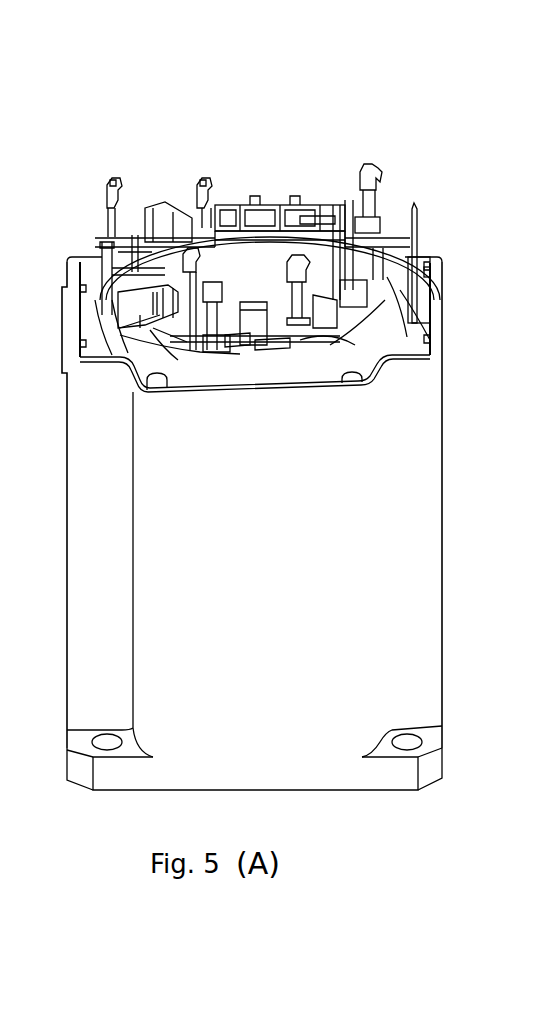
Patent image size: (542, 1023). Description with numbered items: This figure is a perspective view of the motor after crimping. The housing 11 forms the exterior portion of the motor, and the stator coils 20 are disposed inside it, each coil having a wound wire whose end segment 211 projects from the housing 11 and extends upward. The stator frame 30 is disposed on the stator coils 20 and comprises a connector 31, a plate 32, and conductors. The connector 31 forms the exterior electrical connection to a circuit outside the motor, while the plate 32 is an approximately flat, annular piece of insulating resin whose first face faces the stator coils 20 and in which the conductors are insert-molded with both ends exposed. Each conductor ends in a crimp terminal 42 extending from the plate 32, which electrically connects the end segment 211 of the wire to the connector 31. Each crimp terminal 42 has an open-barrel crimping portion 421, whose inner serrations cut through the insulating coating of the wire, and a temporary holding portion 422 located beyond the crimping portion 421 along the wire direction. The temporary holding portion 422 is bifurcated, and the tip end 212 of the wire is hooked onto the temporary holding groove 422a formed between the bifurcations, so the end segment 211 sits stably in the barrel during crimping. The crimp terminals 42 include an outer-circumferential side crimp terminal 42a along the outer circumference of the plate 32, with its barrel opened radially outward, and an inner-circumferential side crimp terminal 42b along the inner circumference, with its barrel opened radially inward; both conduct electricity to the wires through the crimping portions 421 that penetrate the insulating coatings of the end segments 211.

The housing 11 is at (443, 660).
The stator coils 20 is at (413, 297).
The stator frame 30 is at (285, 186).
The connector 31 is at (317, 226).
The plate 32 is at (420, 285).
The crimp terminal 42 is at (390, 195).
The outer-circumferential side crimp terminal 42a is at (192, 322).
The inner-circumferential side crimp terminal 42b is at (268, 52).
The crimping portion 421 is at (232, 180).
The temporary holding portion 422 is at (222, 180).
The temporary holding groove 422a is at (205, 180).
The end segment 211 is at (245, 370).
The tip end 212 is at (270, 352).